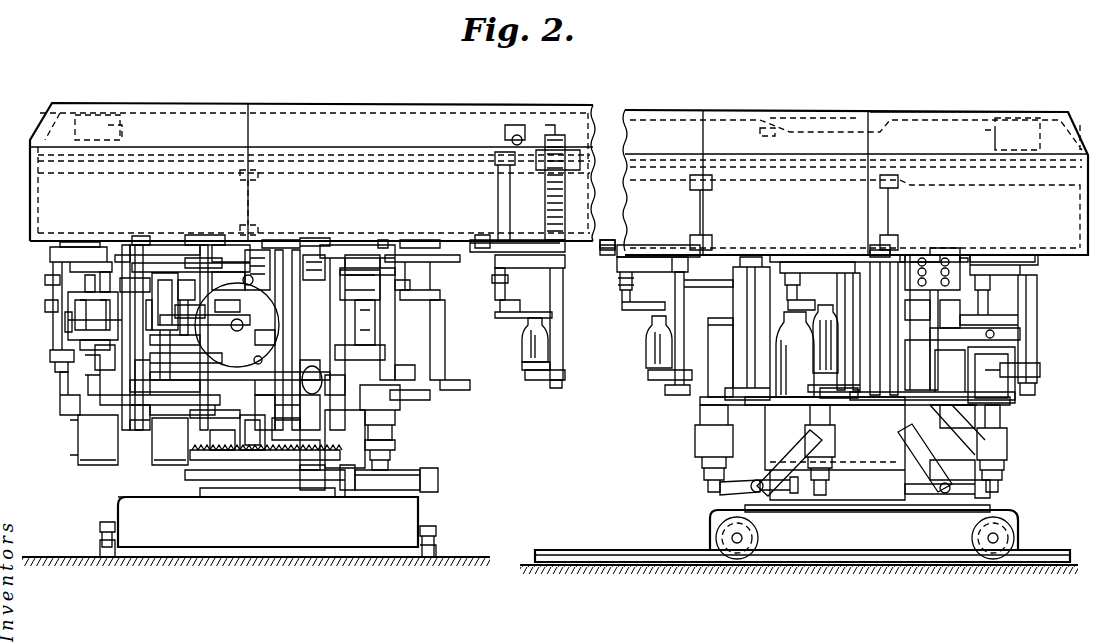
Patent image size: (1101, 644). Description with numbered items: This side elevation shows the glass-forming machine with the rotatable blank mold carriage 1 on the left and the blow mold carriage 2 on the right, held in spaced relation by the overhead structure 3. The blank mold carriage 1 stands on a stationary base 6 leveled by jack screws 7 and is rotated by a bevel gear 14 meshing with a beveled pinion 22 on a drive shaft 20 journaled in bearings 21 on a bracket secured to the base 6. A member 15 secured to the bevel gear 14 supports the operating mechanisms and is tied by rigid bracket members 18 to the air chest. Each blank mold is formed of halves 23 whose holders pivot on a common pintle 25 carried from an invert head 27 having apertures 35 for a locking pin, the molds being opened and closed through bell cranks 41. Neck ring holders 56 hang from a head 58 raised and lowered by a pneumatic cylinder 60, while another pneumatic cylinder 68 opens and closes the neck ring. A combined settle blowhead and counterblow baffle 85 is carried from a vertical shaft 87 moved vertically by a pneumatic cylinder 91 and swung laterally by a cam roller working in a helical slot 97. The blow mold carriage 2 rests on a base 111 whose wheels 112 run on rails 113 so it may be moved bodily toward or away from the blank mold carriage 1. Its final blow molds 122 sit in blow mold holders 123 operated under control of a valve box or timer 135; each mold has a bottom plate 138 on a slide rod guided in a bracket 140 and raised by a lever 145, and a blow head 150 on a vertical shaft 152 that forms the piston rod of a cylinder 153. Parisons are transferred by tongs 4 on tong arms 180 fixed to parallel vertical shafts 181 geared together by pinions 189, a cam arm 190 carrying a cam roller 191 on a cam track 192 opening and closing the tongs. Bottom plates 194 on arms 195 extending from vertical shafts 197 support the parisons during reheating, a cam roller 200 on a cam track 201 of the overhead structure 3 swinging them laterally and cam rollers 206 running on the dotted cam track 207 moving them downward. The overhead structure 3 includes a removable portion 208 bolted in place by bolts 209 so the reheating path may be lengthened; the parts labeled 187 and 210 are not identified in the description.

The blank mold carriage 1 is at (392, 392).
The blow mold carriage 2 is at (1018, 424).
The overhead structure 3 is at (353, 106).
The tongs 4 is at (544, 313).
The base 6 is at (421, 517).
The jack screws 7 is at (102, 525).
The bevel gear 14 is at (195, 478).
The member 15 is at (250, 460).
The bracket members 18 is at (115, 330).
The drive shaft 20 is at (432, 470).
The bearings 21 is at (405, 490).
The beveled pinion 22 is at (345, 490).
The complementary portions or halves 23 is at (372, 295).
The pintle 25 is at (373, 331).
The invert head 27 is at (240, 432).
The apertures 35 is at (215, 244).
The bell cranks 41 is at (285, 250).
The neck ring holders 56 is at (115, 345).
The head 58 is at (148, 420).
The pneumatic cylinder 60 is at (365, 445).
The pneumatic cylinder 68 is at (390, 410).
The combined settle blowhead and counterblow baffle 85 is at (258, 250).
The vertical shaft 87 is at (315, 255).
The pneumatic cylinder 91 is at (268, 497).
The helical slot 97 is at (322, 430).
The base 111 is at (908, 563).
The wheels 112 is at (758, 539).
The rails 113 is at (602, 552).
The final blow molds 122 is at (712, 372).
The blow mold holders 123 is at (72, 313).
The valve box or timer 135 is at (968, 255).
The bottom plate 138 is at (708, 410).
The bracket 140 is at (985, 430).
The lever 145 is at (735, 488).
The blow head 150 is at (880, 248).
The vertical shaft 152 is at (920, 258).
The cylinder 153 is at (860, 468).
The tong arms 180 is at (503, 330).
The parallel vertical shafts 181 is at (499, 292).
The hanger bracket 187 is at (505, 150).
The pinions 189 is at (632, 285).
The cam arm 190 is at (480, 258).
The cam roller 191 is at (478, 236).
The cam track 192 is at (383, 240).
The bottom plates 194 is at (527, 367).
The laterally extending arm 195 is at (545, 382).
The vertical shaft 197 is at (565, 302).
The cam roller 200 is at (575, 135).
The cam track 201 is at (975, 185).
The cam rollers 206 is at (555, 130).
The cam track 207 is at (775, 128).
The removable portion 208 is at (868, 113).
The bolts 209 is at (898, 182).
The roof rail 210 is at (835, 128).